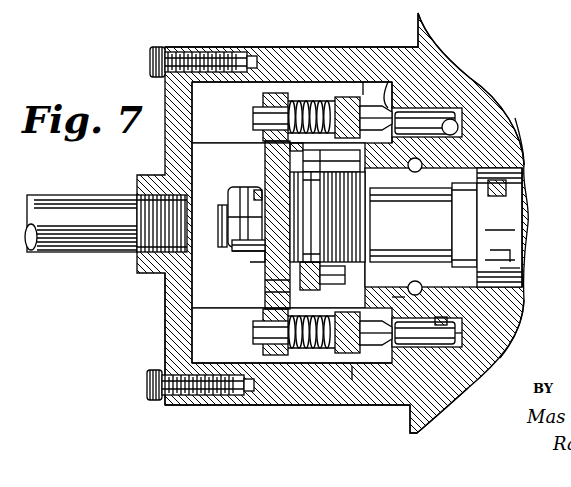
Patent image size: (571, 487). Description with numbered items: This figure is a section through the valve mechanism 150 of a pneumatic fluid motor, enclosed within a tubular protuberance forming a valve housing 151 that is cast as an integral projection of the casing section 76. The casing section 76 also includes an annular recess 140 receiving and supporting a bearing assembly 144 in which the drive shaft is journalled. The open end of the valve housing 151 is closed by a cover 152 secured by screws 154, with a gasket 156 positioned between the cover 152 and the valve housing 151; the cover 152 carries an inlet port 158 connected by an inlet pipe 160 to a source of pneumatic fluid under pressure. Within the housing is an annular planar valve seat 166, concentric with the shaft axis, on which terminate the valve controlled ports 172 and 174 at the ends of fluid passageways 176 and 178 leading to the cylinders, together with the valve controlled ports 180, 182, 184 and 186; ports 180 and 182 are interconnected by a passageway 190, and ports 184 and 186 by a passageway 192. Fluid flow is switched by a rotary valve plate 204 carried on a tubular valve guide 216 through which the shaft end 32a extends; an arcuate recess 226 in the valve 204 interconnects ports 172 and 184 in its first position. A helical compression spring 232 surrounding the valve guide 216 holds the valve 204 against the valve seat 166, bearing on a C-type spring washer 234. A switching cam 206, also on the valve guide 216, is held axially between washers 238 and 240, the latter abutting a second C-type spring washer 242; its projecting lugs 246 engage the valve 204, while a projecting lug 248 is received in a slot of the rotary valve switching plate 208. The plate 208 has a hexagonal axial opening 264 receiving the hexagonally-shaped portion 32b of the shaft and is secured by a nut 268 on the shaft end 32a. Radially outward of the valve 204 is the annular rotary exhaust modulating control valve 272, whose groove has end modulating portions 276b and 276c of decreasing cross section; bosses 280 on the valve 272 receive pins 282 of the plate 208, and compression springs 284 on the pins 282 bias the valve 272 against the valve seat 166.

The valve mechanism 150 is at (198, 292).
The valve housing 151 is at (243, 406).
The cover 152 is at (165, 345).
The screws 154 is at (151, 60).
The gasket 156 is at (203, 62).
The inlet port 158 is at (133, 210).
The inlet pipe 160 is at (67, 196).
The annular planar valve seat 166 is at (421, 42).
The valve controlled port 172 is at (403, 298).
The valve controlled port 174 is at (386, 145).
The fluid passageway 176 is at (422, 288).
The fluid passageway 178 is at (422, 166).
The valve controlled port 180 is at (445, 231).
The valve controlled port 182 is at (453, 152).
The valve controlled port 184 is at (527, 230).
The valve controlled port 186 is at (462, 340).
The passageway 190 is at (506, 128).
The passageway 192 is at (515, 322).
The rotary valve plate 204 is at (436, 103).
The switching cam 206 is at (316, 152).
The rotary valve switching plate 208 is at (286, 82).
The tubular valve guide 216 is at (522, 200).
The arcuate recess 226 is at (452, 113).
The helical compression spring 232 is at (372, 222).
The C-type spring washer 234 is at (323, 264).
The washer 238 is at (334, 290).
The washer 240 is at (305, 288).
The C-type spring washer 242 is at (265, 300).
The projecting lugs 246 is at (290, 146).
The projecting lug 248 is at (285, 296).
The hexagonal axial opening 264 is at (258, 192).
The nut 268 is at (250, 264).
The annular rotary exhaust modulating control valve 272 is at (363, 82).
The end modulating portion 276c is at (388, 82).
The end modulating portion 276b is at (352, 366).
The bosses 280 is at (350, 96).
The pins 282 is at (262, 115).
The compression springs 284 is at (317, 100).
The end of the drive shaft 32a is at (227, 206).
The hexagonally-shaped portion of the drive shaft 32b is at (232, 249).
The casing section 76 is at (428, 426).
The annular recess 140 is at (524, 287).
The bearing assembly 144 is at (518, 263).